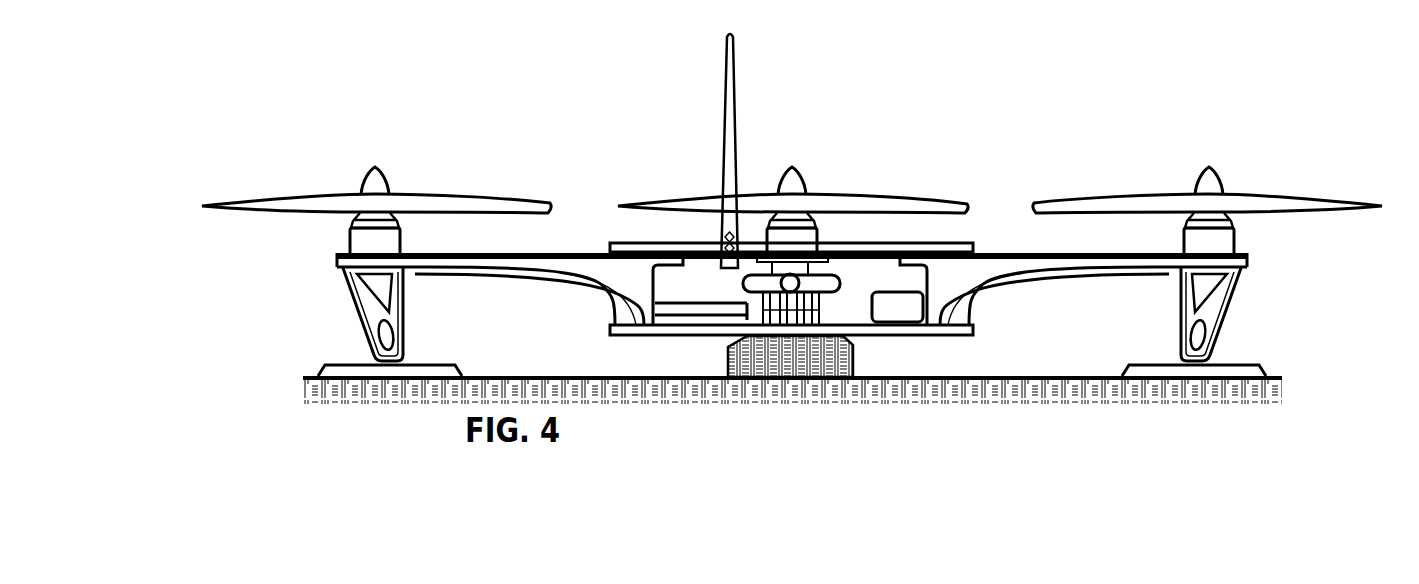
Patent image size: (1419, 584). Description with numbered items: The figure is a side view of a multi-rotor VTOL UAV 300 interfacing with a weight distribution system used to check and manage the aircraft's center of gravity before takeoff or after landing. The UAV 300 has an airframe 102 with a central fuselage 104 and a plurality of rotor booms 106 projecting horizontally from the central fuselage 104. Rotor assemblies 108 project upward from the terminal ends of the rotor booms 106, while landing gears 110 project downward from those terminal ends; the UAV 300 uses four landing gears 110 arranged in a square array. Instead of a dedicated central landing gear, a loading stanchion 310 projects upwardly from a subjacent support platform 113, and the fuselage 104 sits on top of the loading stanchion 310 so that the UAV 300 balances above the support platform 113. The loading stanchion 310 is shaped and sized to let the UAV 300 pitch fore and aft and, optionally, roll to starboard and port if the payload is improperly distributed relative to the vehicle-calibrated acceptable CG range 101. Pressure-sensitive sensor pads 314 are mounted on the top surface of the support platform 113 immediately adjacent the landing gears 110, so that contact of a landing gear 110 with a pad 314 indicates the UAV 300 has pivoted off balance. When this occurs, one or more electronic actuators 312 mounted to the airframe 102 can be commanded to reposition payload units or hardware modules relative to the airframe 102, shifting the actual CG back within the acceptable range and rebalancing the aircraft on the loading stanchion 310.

The multi-rotor VTOL UAV 300 is at (250, 36).
The acceptable CG range 101 is at (840, 280).
The airframe 102 is at (583, 123).
The central fuselage 104 is at (618, 243).
The rotor booms 106 is at (563, 262).
The rotor assemblies 108 is at (373, 123).
The landing gears 110 is at (362, 320).
The support platform 113 is at (1060, 377).
The loading stanchion 310 is at (710, 348).
The electronic actuators 312 is at (903, 322).
The pressure-sensitive sensor pads 314 is at (330, 366).